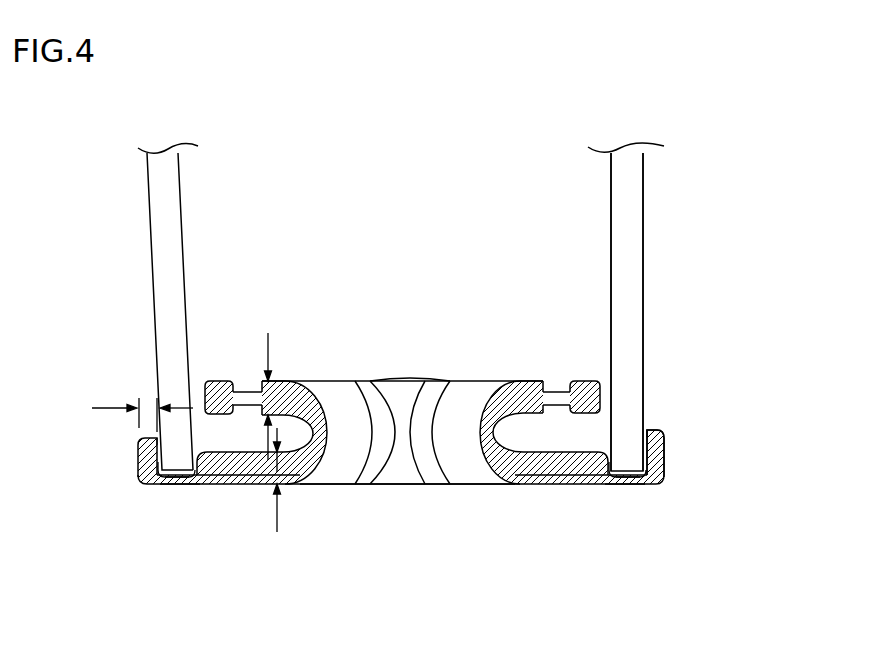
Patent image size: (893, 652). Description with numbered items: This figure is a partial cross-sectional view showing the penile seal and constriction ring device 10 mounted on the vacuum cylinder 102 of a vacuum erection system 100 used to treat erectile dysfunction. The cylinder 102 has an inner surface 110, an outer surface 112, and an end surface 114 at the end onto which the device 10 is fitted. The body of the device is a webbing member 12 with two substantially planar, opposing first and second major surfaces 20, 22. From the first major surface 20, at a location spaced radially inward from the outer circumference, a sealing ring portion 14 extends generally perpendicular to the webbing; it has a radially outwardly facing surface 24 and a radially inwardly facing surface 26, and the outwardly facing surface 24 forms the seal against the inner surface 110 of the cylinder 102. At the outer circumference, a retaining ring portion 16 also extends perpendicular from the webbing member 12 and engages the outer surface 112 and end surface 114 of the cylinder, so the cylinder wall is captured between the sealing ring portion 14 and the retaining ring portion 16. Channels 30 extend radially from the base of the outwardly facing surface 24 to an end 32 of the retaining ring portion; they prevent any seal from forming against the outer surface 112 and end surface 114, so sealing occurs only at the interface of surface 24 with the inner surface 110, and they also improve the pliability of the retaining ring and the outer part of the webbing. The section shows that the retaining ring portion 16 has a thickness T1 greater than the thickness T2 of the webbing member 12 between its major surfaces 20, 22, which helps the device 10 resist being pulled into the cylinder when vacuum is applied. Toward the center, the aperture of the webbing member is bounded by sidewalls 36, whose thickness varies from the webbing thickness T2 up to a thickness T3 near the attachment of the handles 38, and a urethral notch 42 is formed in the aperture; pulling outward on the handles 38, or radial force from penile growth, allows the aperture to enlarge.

The penile seal and constriction ring device 10 is at (340, 492).
The webbing member 12 is at (235, 484).
The sealing ring portion 14 is at (198, 457).
The retaining ring portion 16 is at (138, 458).
The first major surface 20 is at (552, 473).
The second major surface 22 is at (535, 484).
The radially outwardly facing surface 24 is at (190, 466).
The radially inwardly facing surface 26 is at (207, 460).
The channels 30 is at (173, 473).
The end of retaining member 32 is at (152, 430).
The sidewalls 36 is at (335, 388).
The handles 38 is at (235, 382).
The urethral notch 42 is at (400, 388).
The vacuum erection system 100 is at (697, 150).
The vacuum cylinder 102 is at (630, 315).
The inner surface 110 is at (183, 247).
The outer surface 112 is at (150, 263).
The end surface 114 is at (173, 477).
The thickness of retaining ring portion T1 is at (126, 414).
The thickness of webbing member T2 is at (279, 492).
The thickness of sidewalls near handles T3 is at (267, 383).